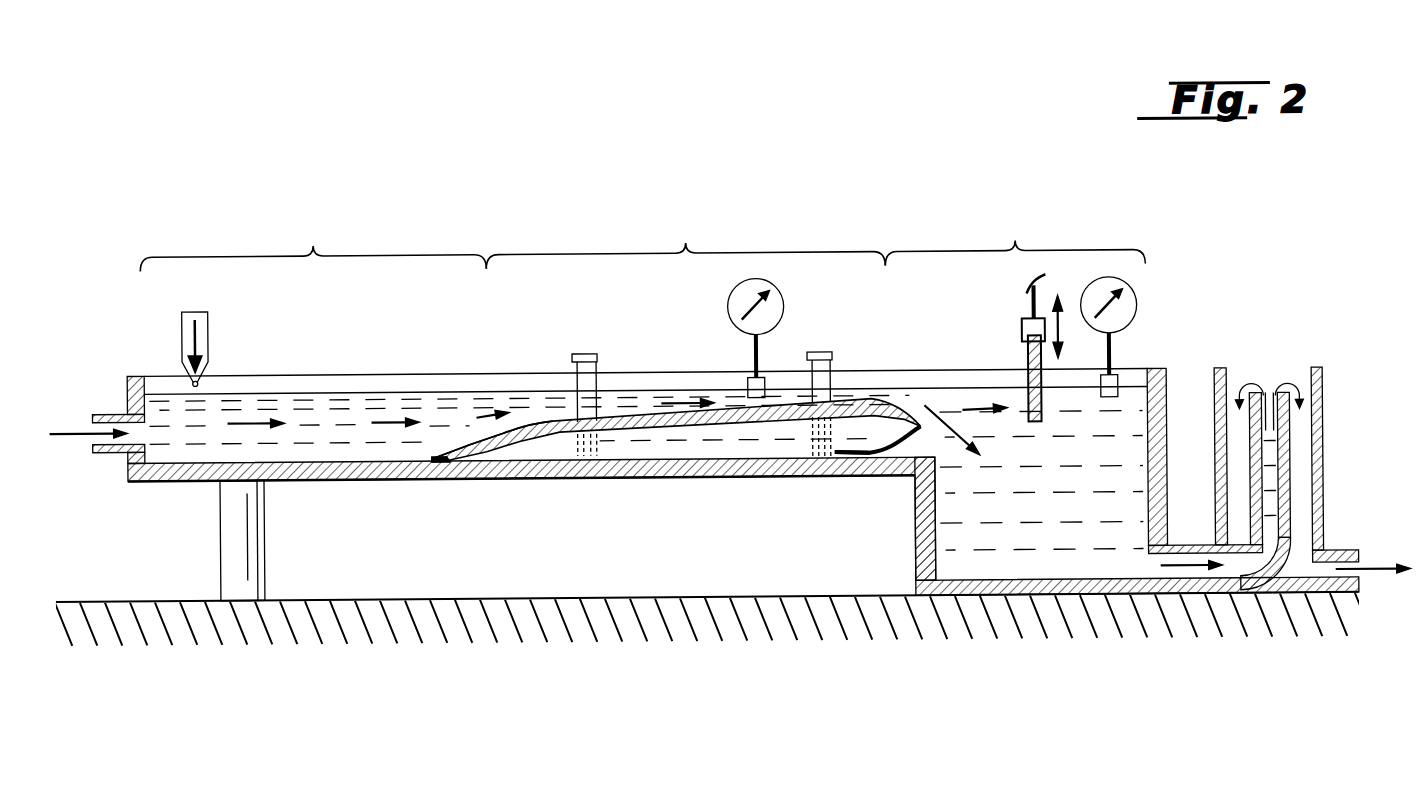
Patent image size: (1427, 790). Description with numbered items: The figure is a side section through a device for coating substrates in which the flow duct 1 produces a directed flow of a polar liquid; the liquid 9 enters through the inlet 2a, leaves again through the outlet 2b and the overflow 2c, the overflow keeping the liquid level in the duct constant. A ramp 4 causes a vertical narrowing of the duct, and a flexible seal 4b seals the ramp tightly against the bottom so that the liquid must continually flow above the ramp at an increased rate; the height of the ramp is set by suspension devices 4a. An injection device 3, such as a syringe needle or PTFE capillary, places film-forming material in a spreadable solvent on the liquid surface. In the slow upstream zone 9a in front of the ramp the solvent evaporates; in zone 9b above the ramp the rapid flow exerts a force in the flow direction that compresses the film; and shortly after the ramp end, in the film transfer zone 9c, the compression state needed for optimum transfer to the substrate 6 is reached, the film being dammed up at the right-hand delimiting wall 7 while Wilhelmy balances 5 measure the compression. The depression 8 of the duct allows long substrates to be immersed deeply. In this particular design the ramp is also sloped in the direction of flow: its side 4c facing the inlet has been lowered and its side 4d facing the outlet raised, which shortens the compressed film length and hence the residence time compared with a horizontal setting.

The flow duct 1 is at (326, 479).
The inlet 2a is at (123, 412).
The outlet 2b is at (1185, 565).
The overflow 2c is at (1295, 390).
The injection device 3 is at (190, 327).
The ramp 4 is at (560, 417).
The suspension devices 4a is at (576, 392).
The flexible seal 4b is at (473, 460).
The side of ramp facing liquid inlet 4c is at (533, 418).
The side of ramp facing outlet 4d is at (898, 407).
The Wilhelmy balances 5 is at (740, 303).
The substrate 6 is at (1028, 360).
The right-hand delimiting wall 7 is at (1165, 417).
The depression 8 is at (1008, 556).
The liquid flow 9 is at (383, 388).
The zone in front of the ramp 9a is at (313, 237).
The zone above the ramp 9b is at (686, 233).
The zone of film transfer 9c is at (1015, 229).